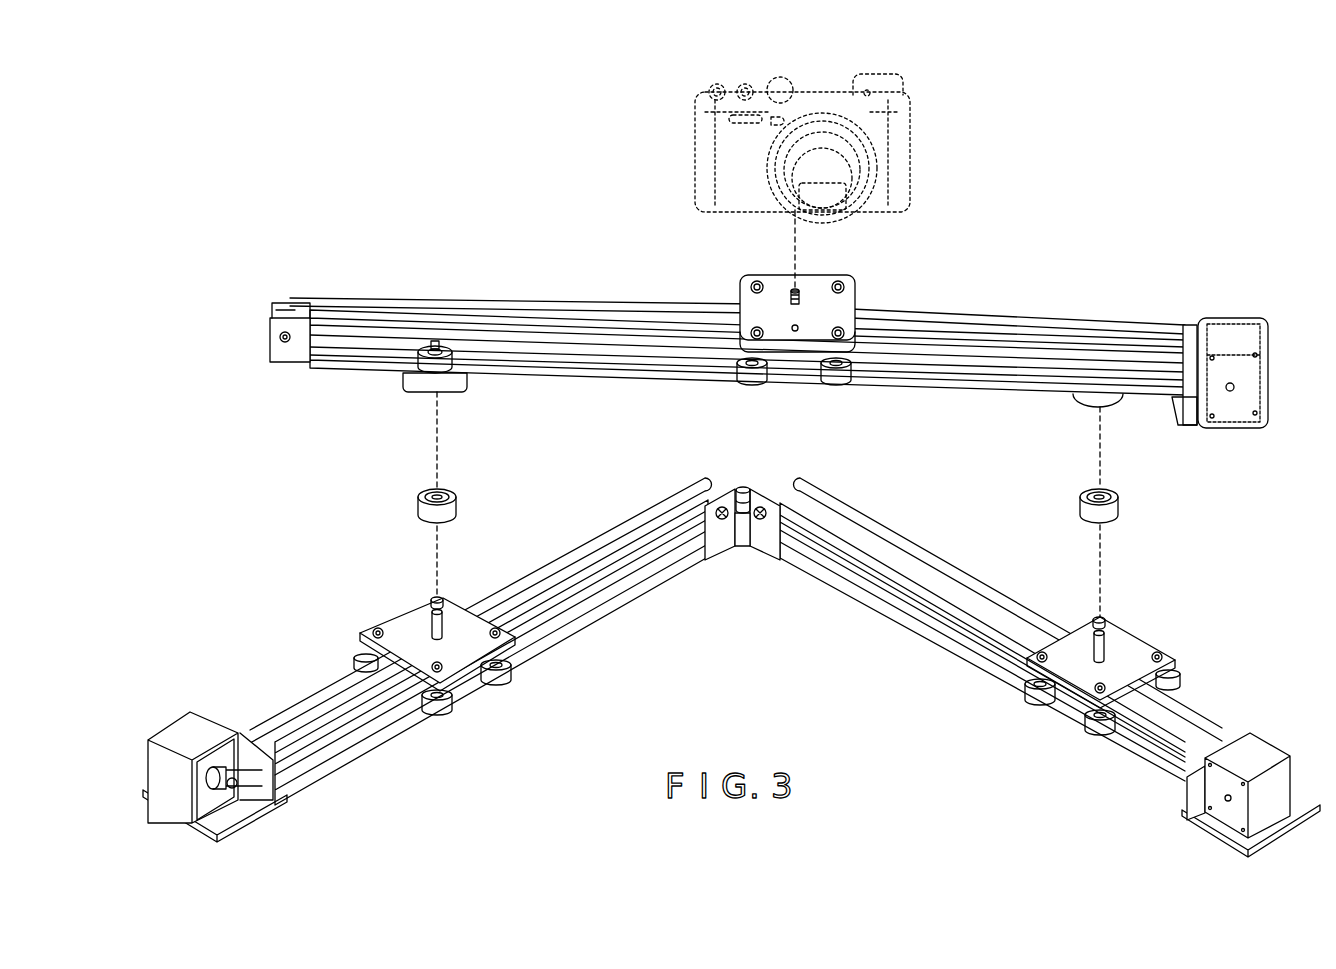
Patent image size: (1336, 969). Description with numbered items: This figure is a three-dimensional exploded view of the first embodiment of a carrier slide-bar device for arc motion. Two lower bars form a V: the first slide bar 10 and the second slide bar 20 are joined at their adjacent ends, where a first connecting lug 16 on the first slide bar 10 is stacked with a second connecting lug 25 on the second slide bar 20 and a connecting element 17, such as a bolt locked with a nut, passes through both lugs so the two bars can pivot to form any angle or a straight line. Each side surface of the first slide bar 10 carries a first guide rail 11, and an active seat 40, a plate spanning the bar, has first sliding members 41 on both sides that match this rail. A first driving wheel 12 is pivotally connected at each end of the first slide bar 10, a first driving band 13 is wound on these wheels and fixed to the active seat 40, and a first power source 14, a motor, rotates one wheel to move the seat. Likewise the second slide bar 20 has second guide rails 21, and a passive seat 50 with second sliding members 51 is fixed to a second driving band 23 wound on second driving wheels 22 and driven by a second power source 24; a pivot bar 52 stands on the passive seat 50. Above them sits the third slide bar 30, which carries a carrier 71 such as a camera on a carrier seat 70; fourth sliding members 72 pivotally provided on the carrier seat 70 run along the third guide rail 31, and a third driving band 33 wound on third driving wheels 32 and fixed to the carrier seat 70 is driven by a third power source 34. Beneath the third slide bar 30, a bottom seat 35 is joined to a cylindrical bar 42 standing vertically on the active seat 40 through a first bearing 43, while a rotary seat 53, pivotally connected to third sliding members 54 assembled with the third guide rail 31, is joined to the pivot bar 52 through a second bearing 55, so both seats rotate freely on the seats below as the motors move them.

The first slide bar 10 is at (948, 603).
The first guide rail 11 is at (842, 580).
The first driving wheel 12 is at (764, 487).
The first driving band 13 is at (957, 582).
The first power source 14 is at (1257, 758).
The first connecting lug 16 is at (751, 544).
The connecting element 17 is at (747, 487).
The second slide bar 20 is at (352, 710).
The second guide rail 21 is at (595, 602).
The second driving wheel 22 is at (728, 487).
The second driving band 23 is at (607, 543).
The second power source 24 is at (192, 733).
The second connecting lug 25 is at (728, 530).
The third slide bar 30 is at (572, 332).
The third guide rail 31 is at (967, 372).
The third driving wheel 32 is at (283, 318).
The third driving band 33 is at (655, 303).
The third power source 34 is at (1230, 343).
The bottom seat 35 is at (1107, 402).
The active seat 40 is at (1130, 638).
The first sliding member 41 is at (1098, 733).
The cylindrical bar 42 is at (1093, 643).
The first bearing 43 is at (1108, 513).
The passive seat 50 is at (403, 630).
The second sliding member 51 is at (510, 678).
The pivot bar 52 is at (441, 627).
The rotary seat 53 is at (452, 380).
The third sliding member 54 is at (456, 348).
The second bearing 55 is at (450, 511).
The carrier seat 70 is at (815, 288).
The carrier 71 is at (871, 92).
The fourth sliding member 72 is at (833, 382).